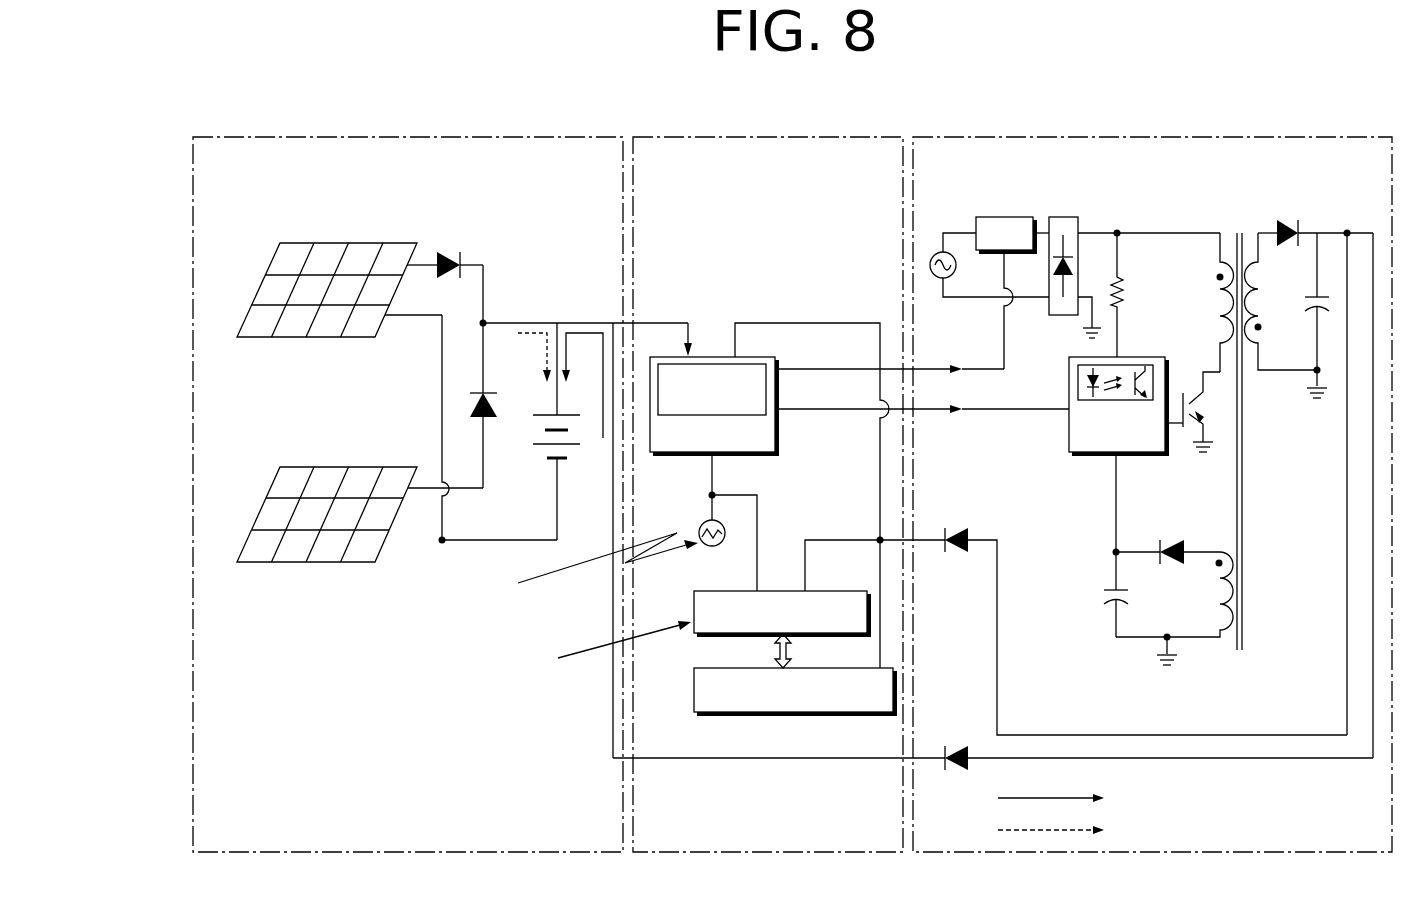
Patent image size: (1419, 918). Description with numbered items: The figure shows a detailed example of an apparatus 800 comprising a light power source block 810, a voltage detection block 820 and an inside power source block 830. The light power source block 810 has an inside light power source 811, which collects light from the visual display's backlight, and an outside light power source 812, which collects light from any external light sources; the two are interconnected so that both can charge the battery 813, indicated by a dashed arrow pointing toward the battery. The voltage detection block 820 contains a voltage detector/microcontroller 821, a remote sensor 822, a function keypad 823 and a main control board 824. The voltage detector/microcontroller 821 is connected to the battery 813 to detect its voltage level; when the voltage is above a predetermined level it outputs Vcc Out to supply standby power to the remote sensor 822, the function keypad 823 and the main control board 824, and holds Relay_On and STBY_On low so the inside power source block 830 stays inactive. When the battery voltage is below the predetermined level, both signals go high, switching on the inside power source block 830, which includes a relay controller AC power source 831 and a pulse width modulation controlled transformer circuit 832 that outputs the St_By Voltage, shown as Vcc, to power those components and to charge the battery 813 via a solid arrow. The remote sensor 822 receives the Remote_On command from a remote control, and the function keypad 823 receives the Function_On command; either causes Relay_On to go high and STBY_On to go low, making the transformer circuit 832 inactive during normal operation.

The apparatus 800 is at (1007, 95).
The light power source block 810 is at (407, 136).
The inside light power source 811 is at (280, 243).
The outside light power source 812 is at (280, 467).
The battery 813 is at (576, 452).
The voltage detection block 820 is at (768, 136).
The voltage detector/microcontroller 821 is at (776, 357).
The remote sensor 822 is at (700, 526).
The function keypad 823 is at (693, 592).
The main control board 824 is at (693, 672).
The inside power source block 830 is at (1151, 136).
The relay controller AC power source 831 is at (975, 217).
The pulse width modulation (PWM)-controlled transformer circuit 832 is at (1163, 357).